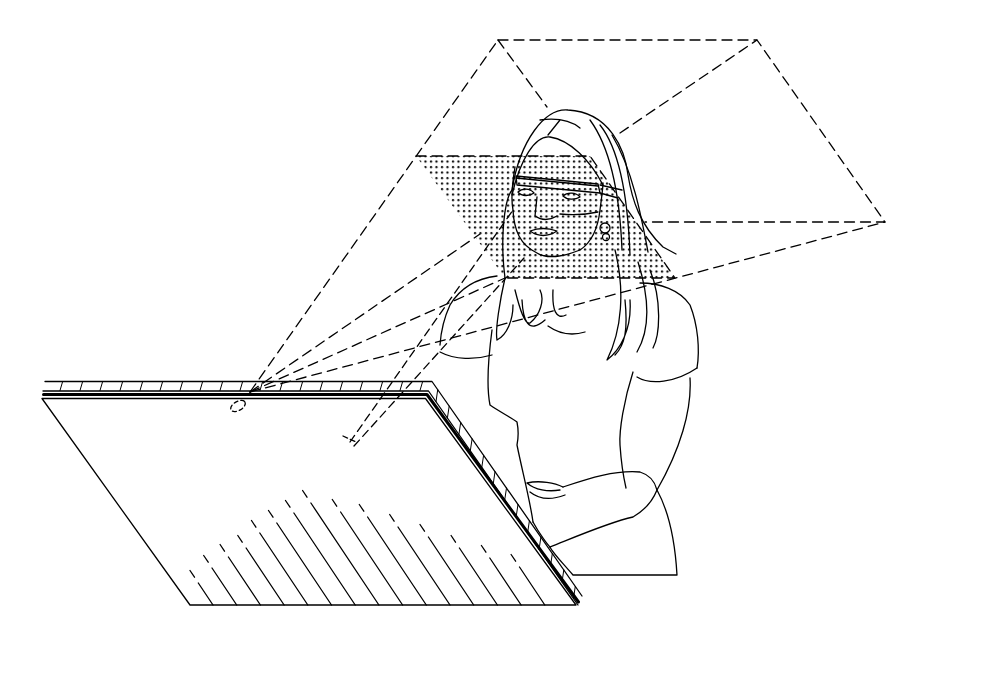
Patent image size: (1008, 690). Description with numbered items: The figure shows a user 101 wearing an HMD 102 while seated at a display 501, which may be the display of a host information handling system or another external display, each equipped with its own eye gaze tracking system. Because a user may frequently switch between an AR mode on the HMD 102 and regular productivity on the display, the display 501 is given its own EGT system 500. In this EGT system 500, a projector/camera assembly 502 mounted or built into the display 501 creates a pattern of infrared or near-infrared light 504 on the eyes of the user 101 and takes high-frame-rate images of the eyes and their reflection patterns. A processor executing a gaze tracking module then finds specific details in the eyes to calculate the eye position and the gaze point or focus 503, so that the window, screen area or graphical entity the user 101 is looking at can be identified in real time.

The EGT system 500 is at (223, 36).
The user 101 is at (694, 385).
The HMD 102 is at (641, 224).
The display 501 is at (158, 519).
The projector/camera assembly 502 is at (221, 420).
The gaze point or focus 503 is at (356, 450).
The pattern of infrared light 504 is at (462, 219).